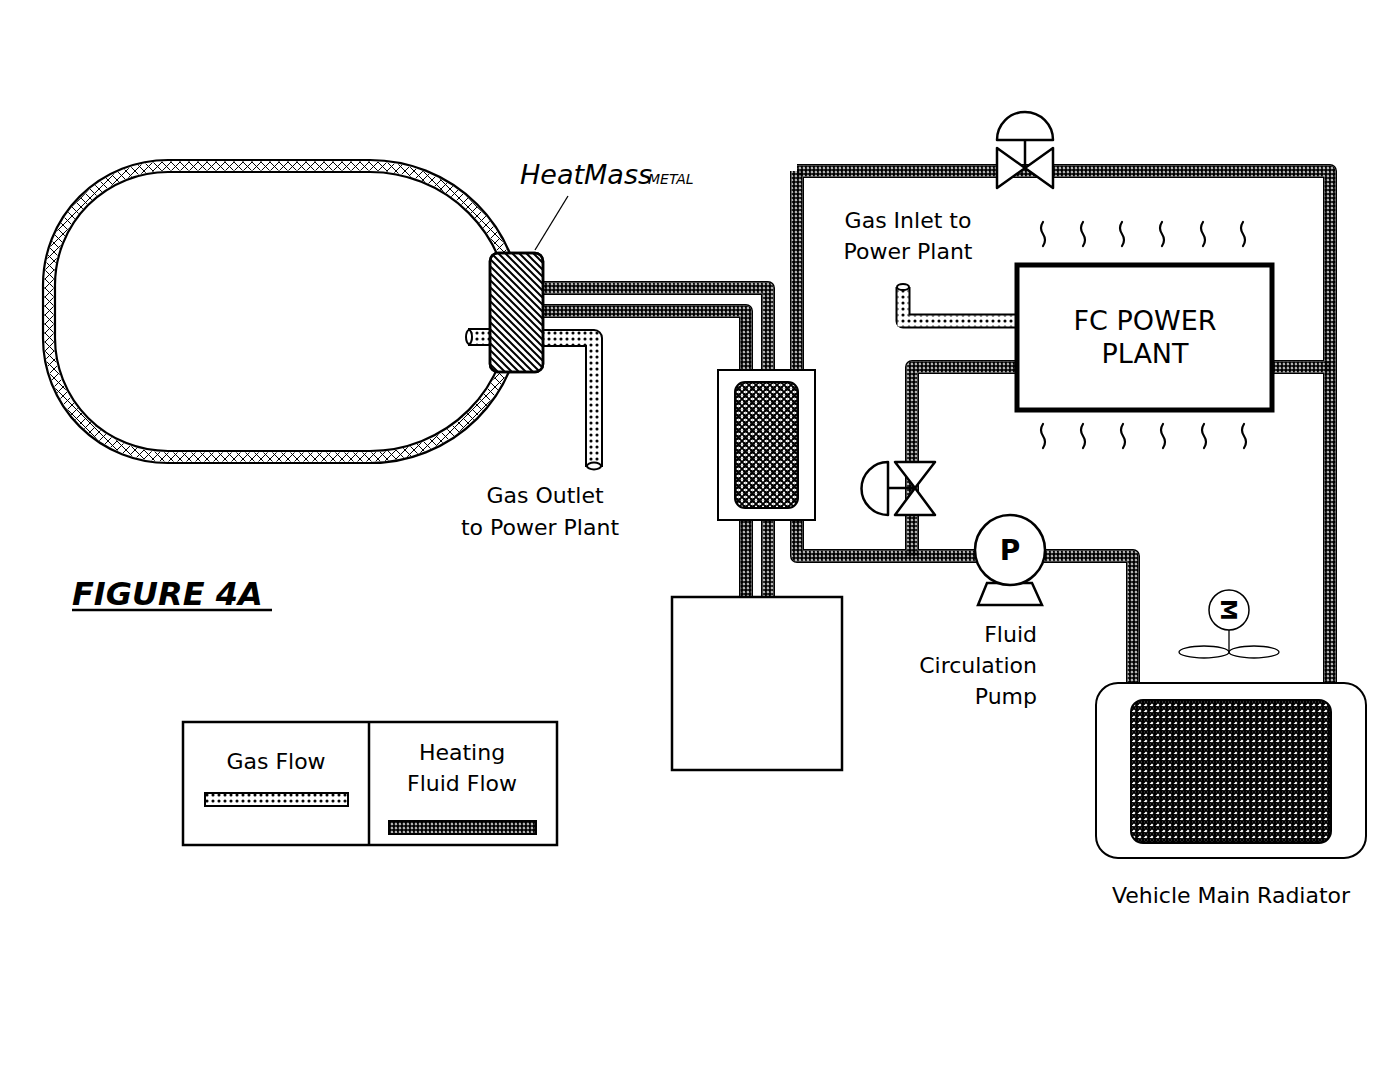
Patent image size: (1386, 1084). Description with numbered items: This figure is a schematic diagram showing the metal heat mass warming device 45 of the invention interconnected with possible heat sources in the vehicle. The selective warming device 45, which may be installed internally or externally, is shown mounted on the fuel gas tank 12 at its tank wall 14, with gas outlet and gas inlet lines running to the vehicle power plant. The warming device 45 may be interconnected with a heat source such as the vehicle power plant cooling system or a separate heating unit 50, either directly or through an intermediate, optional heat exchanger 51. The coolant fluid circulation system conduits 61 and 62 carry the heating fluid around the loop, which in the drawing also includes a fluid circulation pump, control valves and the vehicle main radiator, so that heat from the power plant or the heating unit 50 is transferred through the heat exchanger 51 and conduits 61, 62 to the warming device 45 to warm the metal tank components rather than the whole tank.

The hydrogen storage tank 12 is at (282, 282).
The tank wall 14 is at (303, 159).
The metal heat mass warming device 45 is at (503, 342).
The separate heating unit 50 is at (744, 712).
The heat exchanger 51 is at (717, 480).
The coolant fluid circulation system conduit 61 is at (1336, 502).
The coolant fluid circulation system conduit 62 is at (705, 282).